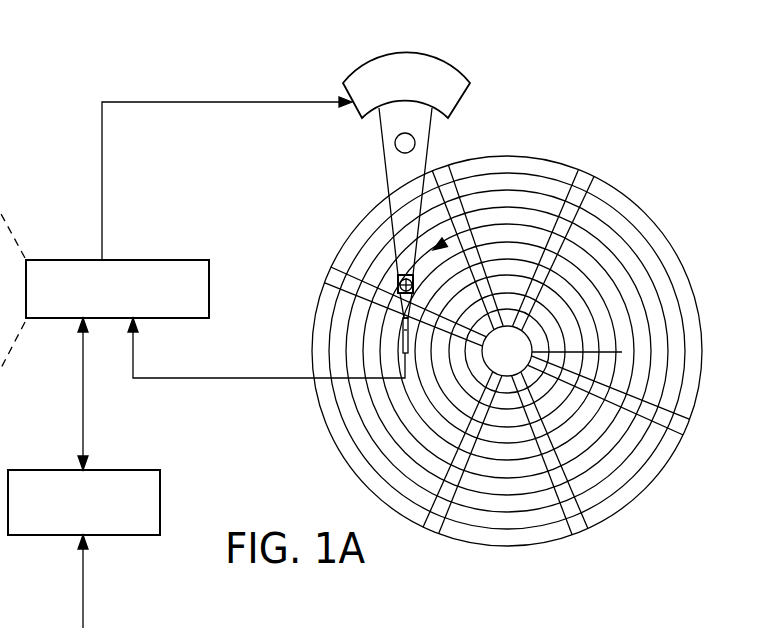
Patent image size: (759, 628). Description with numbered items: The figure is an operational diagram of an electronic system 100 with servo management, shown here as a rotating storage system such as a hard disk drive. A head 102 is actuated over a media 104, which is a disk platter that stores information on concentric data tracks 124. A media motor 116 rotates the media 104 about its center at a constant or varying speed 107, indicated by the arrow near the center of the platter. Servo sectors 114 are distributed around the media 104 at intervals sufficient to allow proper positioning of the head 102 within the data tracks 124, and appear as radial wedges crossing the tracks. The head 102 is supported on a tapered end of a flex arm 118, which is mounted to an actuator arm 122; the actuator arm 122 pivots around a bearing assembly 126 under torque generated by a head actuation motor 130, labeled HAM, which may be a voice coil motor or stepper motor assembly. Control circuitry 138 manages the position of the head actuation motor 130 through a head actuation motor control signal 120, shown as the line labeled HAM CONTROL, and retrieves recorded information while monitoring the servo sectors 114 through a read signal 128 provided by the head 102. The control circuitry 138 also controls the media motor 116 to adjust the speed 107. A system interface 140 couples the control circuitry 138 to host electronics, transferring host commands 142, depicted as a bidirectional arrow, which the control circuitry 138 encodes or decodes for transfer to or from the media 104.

The electronic system 100 is at (630, 66).
The head 102 is at (400, 352).
The media 104 is at (640, 200).
The speed 107 is at (515, 230).
The servo sectors 114 is at (578, 524).
The media motor 116 is at (622, 352).
The flex arm 118 is at (334, 278).
The head actuation motor (HAM) control signal 120 is at (102, 178).
The actuator arm 122 is at (407, 188).
The data tracks 124 is at (402, 470).
The bearing assembly 126 is at (404, 153).
The read signal 128 is at (210, 379).
The head actuation motor 130 is at (440, 82).
The control circuitry 138 is at (158, 266).
The system interface 140 is at (97, 531).
The host commands 142 is at (85, 378).